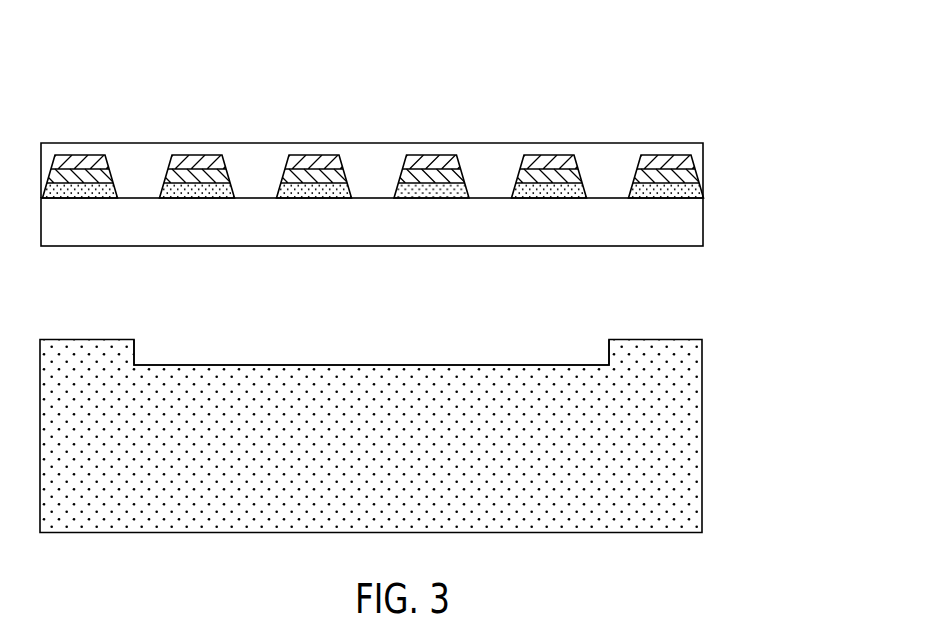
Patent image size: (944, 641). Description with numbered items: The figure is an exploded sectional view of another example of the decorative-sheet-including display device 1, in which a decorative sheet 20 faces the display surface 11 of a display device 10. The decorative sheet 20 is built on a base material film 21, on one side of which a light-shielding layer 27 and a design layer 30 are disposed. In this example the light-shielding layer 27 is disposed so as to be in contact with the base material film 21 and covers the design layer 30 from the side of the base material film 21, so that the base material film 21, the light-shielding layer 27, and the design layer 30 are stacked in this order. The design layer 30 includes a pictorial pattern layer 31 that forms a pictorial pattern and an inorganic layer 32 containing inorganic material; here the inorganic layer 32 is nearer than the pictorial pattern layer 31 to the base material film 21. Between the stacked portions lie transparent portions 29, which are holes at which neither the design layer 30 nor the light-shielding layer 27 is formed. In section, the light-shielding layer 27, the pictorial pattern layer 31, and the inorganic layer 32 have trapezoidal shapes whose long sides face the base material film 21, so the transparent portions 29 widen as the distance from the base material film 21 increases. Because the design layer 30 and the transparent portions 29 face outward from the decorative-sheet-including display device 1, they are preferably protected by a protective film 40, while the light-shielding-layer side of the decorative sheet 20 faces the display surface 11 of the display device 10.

The decorative-sheet-including display device 1 is at (107, 84).
The display device 10 is at (697, 420).
The display surface 11 is at (533, 339).
The decorative sheet 20 is at (807, 115).
The base material film 21 is at (700, 233).
The light-shielding layer 27 is at (698, 189).
The transparent portions 29 is at (609, 173).
The design layer 30 is at (765, 117).
The pictorial pattern layer 31 is at (705, 143).
The inorganic layer 32 is at (700, 175).
The protective film 40 is at (369, 155).